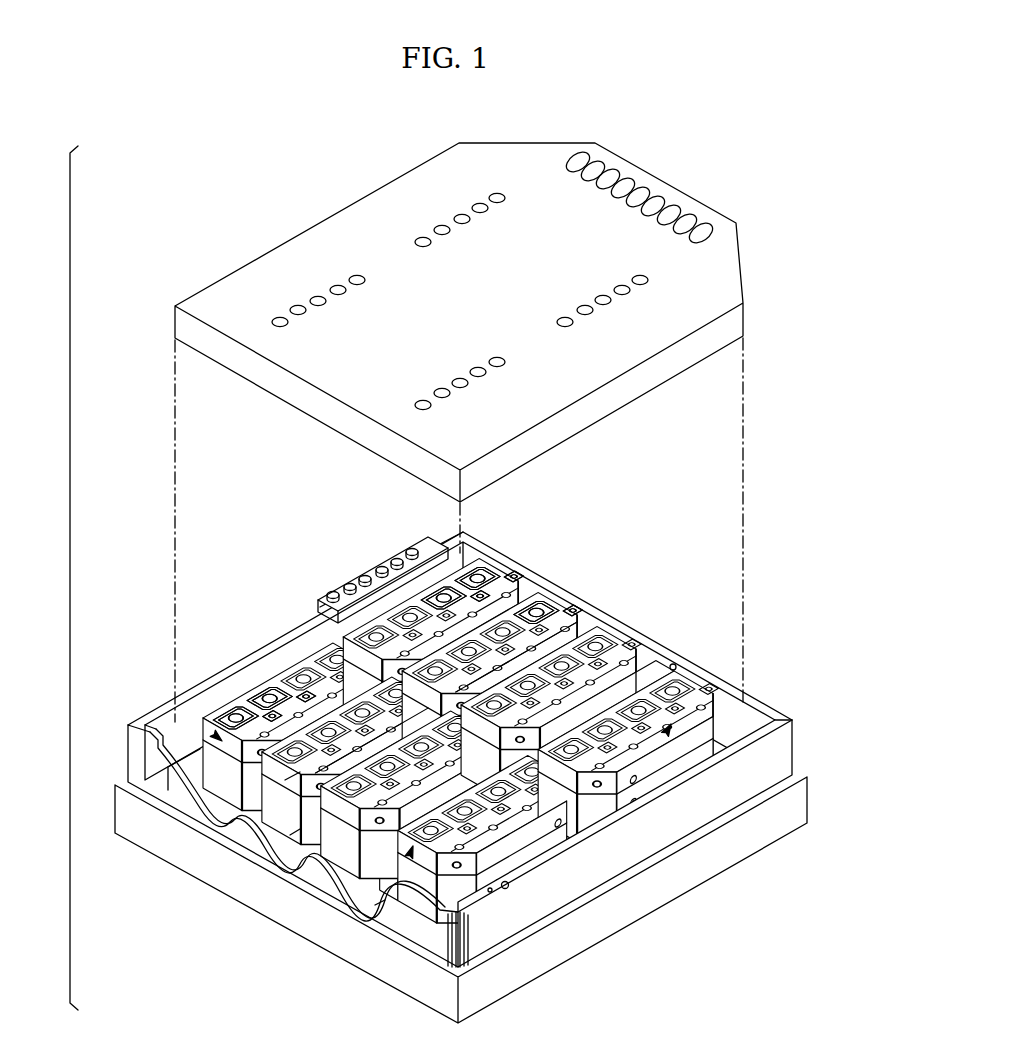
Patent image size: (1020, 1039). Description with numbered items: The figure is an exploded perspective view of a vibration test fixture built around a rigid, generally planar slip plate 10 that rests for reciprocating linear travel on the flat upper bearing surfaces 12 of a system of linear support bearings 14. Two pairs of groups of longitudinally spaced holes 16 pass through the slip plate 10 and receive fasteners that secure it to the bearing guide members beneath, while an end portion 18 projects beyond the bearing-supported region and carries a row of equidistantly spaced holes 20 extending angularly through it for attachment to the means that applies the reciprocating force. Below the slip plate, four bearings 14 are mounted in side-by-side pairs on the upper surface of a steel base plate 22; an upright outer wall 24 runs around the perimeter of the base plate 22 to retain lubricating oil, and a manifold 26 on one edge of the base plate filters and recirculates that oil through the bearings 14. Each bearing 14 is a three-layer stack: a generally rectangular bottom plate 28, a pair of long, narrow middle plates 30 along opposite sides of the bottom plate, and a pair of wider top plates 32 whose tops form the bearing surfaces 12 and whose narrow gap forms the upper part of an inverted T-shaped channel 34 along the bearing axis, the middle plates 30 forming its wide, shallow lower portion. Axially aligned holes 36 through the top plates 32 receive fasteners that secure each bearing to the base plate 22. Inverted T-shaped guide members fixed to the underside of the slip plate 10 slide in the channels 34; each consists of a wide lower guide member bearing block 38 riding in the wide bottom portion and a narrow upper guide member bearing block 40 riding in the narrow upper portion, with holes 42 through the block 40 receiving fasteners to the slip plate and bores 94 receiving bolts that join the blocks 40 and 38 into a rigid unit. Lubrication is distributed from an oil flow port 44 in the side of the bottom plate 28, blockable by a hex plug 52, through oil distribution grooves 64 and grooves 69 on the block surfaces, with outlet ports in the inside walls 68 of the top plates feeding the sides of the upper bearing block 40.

The slip plate 10 is at (300, 165).
The upper bearing surfaces 12 is at (550, 607).
The linear support bearings 14 is at (439, 767).
The holes 16 is at (497, 198).
The end portion 18 is at (545, 152).
The holes 20 is at (655, 192).
The base plate 22 is at (260, 787).
The outer wall 24 is at (585, 872).
The manifold 26 is at (418, 548).
The bottom plate 28 is at (295, 833).
The middle plates 30 is at (193, 787).
The top plates 32 is at (195, 730).
The T-shaped channel 34 is at (380, 905).
The holes 36 is at (248, 690).
The lower guide member bearing block 38 is at (298, 778).
The upper guide member bearing block 40 is at (278, 951).
The holes 42 is at (214, 733).
The oil flow port 44 is at (508, 888).
The hex plug 52 is at (492, 893).
The oil distribution grooves 64 is at (505, 572).
The inside walls 68 is at (513, 590).
The oil distribution grooves 69 is at (385, 573).
The bores 94 is at (676, 667).